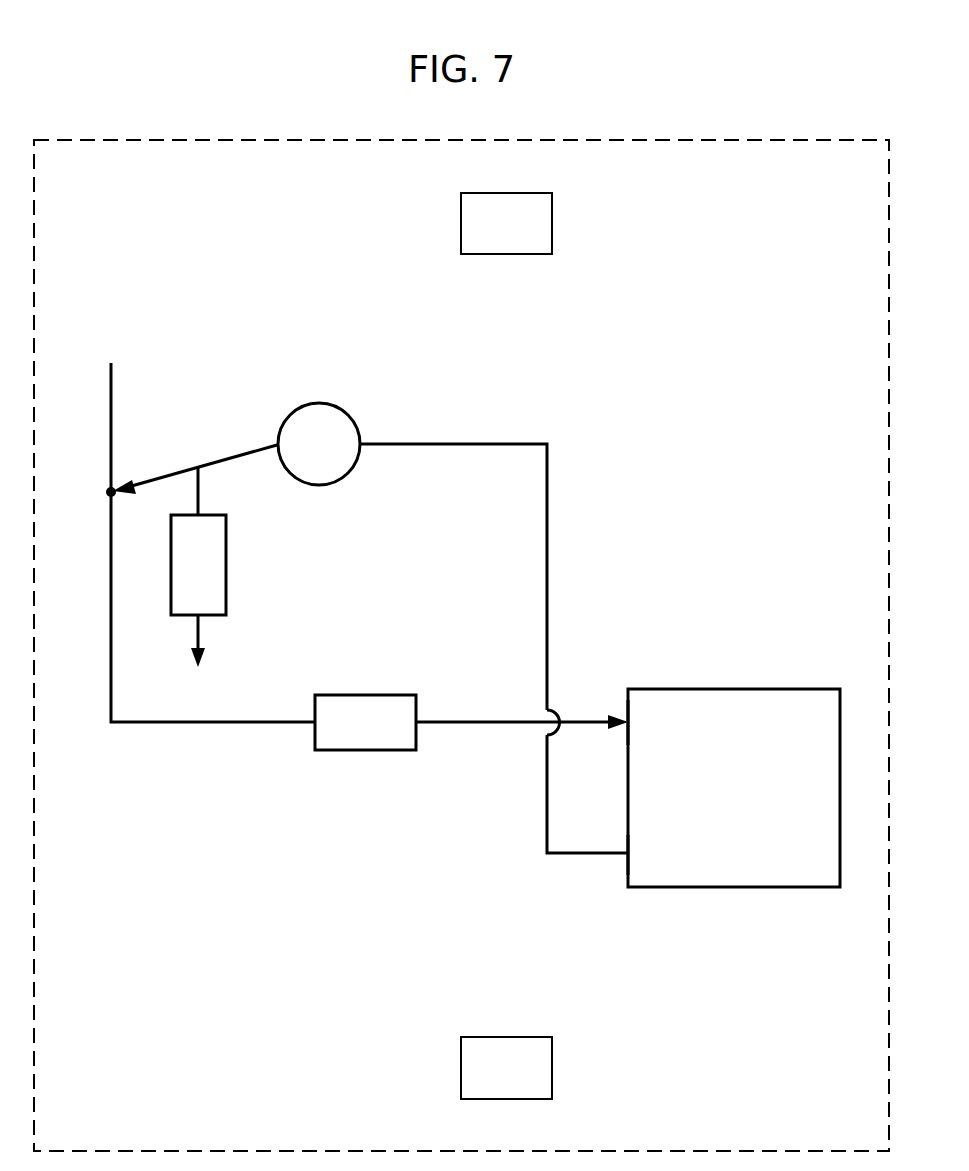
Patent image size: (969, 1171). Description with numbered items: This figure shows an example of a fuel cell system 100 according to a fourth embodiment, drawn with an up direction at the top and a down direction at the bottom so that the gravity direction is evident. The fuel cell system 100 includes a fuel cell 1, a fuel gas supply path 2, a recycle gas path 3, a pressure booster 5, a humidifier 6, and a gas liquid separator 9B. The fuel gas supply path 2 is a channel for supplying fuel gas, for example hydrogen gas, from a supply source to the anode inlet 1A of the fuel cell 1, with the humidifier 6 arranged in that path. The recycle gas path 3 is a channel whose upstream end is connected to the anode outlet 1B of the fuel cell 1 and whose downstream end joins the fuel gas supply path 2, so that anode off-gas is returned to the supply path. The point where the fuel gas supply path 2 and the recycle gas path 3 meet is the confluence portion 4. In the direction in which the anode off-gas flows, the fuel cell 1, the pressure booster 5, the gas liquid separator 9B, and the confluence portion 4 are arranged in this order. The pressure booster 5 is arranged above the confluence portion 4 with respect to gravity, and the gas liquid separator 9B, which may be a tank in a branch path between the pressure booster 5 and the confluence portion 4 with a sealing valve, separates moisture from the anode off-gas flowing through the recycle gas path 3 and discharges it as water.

The fuel cell system 100 is at (604, 334).
The fuel cell 1 is at (725, 806).
The anode inlet 1A is at (630, 718).
The anode outlet 1B is at (630, 853).
The fuel gas supply path 2 is at (205, 725).
The recycle gas path 3 is at (377, 441).
The confluence portion 4 is at (108, 494).
The pressure booster 5 is at (311, 456).
The humidifier 6 is at (355, 739).
The gas liquid separator 9B is at (182, 583).